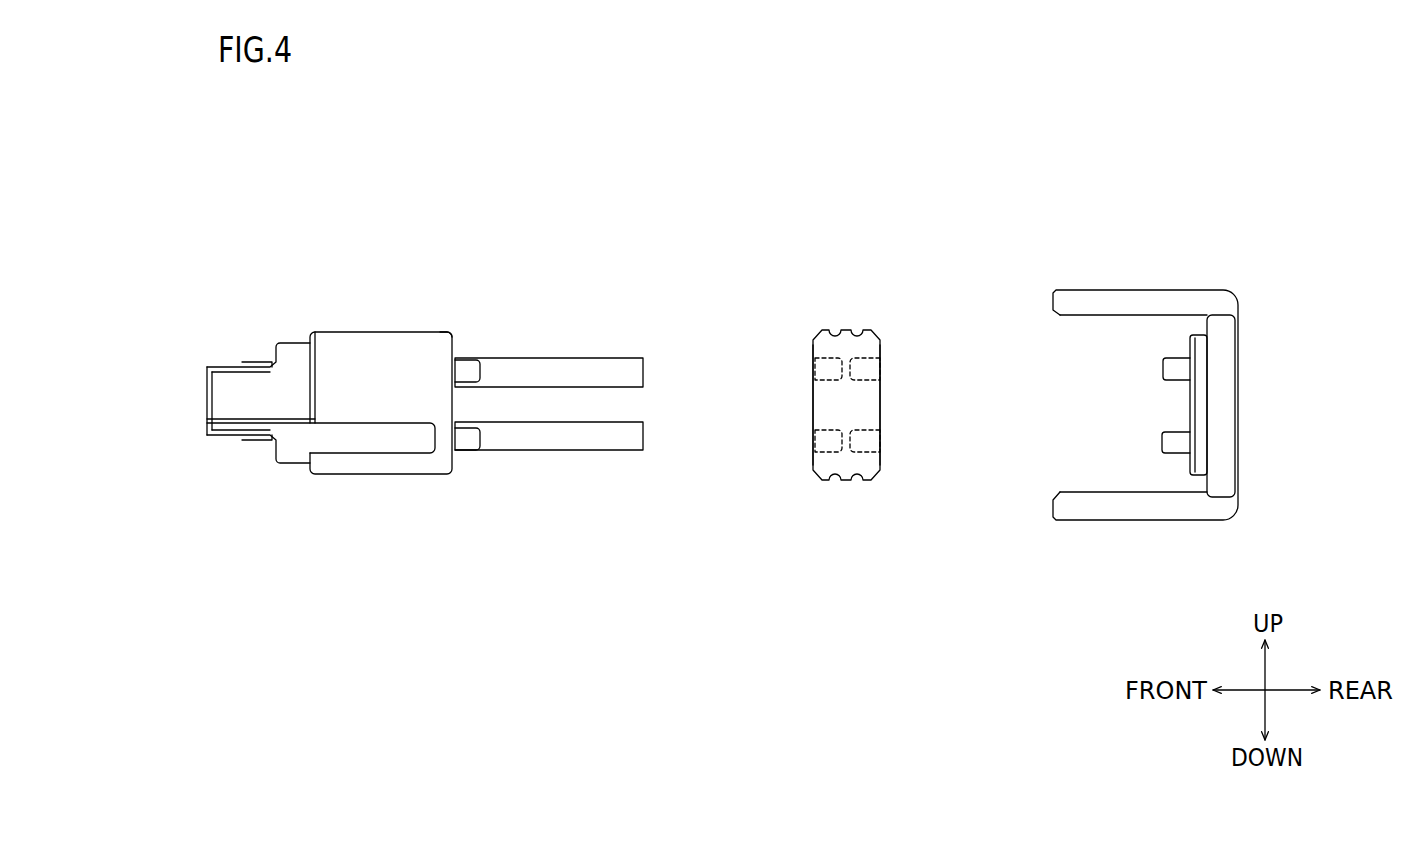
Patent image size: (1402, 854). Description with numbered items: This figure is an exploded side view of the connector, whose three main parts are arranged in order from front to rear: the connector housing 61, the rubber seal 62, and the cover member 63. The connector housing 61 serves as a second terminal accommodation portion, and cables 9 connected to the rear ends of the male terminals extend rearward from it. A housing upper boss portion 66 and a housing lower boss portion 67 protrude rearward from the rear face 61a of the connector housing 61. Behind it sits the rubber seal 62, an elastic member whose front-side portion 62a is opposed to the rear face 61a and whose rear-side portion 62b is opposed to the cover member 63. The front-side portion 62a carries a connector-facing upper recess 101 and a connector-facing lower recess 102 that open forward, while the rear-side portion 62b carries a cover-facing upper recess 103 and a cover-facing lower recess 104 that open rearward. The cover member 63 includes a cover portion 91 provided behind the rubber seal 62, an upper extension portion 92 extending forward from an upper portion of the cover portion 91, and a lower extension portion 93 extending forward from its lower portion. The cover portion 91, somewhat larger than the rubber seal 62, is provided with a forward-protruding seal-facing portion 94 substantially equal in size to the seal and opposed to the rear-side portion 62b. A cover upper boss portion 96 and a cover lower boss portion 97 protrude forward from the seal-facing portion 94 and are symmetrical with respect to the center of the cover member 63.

The cable 9 is at (603, 372).
The connector housing 61 is at (380, 285).
The rear face 61a is at (455, 340).
The rubber seal 62 is at (845, 287).
The front-side portion 62a is at (813, 345).
The rear-side portion 62b is at (880, 345).
The cover member 63 is at (1235, 238).
The housing upper boss portion 66 is at (470, 370).
The housing lower boss portion 67 is at (468, 440).
The cover portion 91 is at (1240, 340).
The upper extension portion 92 is at (1138, 288).
The lower extension portion 93 is at (1137, 522).
The seal-facing portion 94 is at (1200, 392).
The cover upper boss portion 96 is at (1173, 368).
The cover lower boss portion 97 is at (1172, 442).
The connector-facing upper recess 101 is at (815, 375).
The connector-facing lower recess 102 is at (815, 447).
The cover-facing upper recess 103 is at (878, 375).
The cover-facing lower recess 104 is at (878, 447).